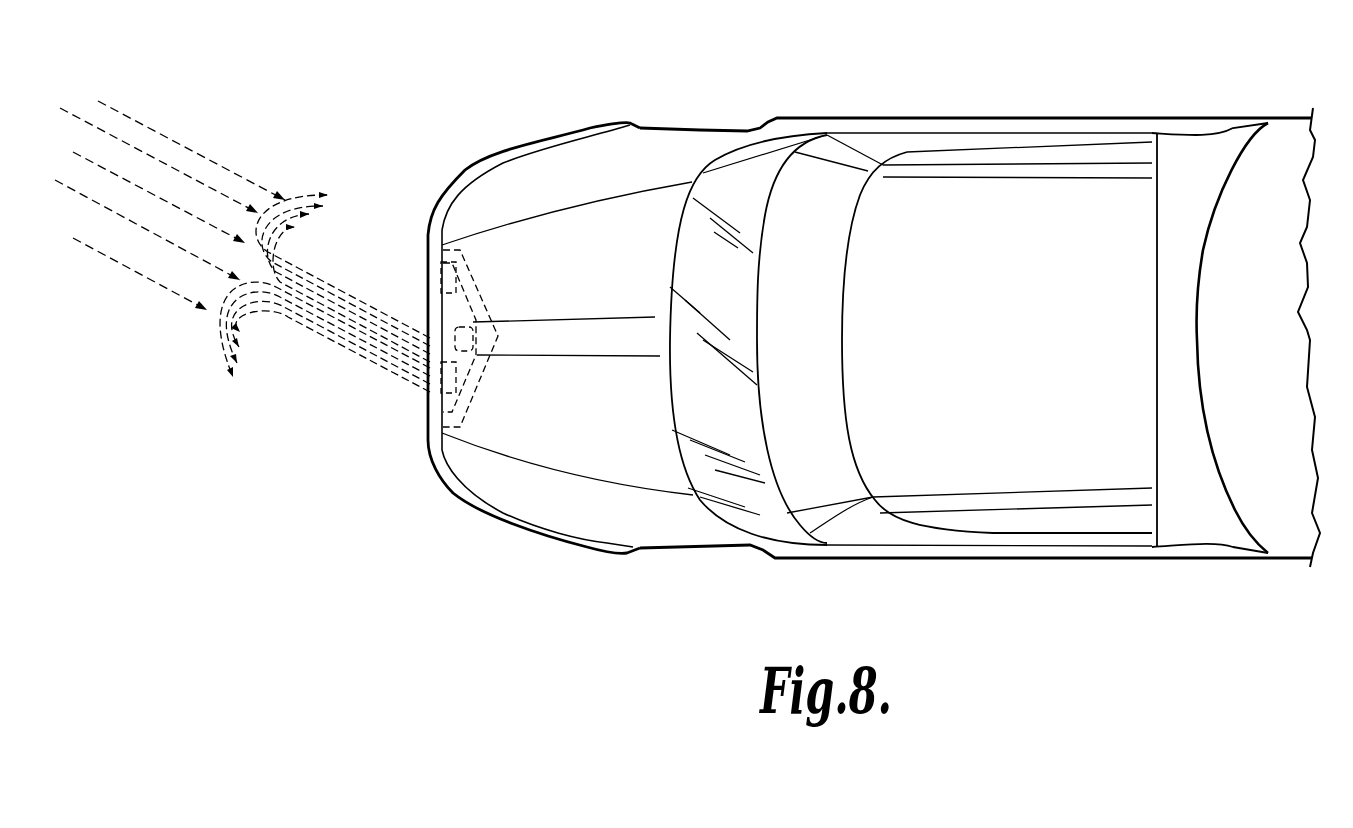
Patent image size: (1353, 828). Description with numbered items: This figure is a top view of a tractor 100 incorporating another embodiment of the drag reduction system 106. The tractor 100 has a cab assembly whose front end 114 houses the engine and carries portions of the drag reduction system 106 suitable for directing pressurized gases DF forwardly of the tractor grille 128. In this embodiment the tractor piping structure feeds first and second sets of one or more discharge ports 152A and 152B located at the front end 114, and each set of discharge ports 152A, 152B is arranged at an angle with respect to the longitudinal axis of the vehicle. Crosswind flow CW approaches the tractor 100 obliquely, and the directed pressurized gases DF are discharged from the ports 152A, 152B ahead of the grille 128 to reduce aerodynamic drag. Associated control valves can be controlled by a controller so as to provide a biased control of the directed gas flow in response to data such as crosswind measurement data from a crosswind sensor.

The tractor 100 is at (985, 118).
The front end 114 is at (573, 130).
The tractor grille 128 is at (427, 258).
The first set of discharge ports 152A is at (442, 288).
The second set of discharge ports 152B is at (435, 392).
The drag reduction system 106 is at (477, 406).
The crosswind flow CW is at (155, 132).
The pressurized gases DF is at (273, 326).